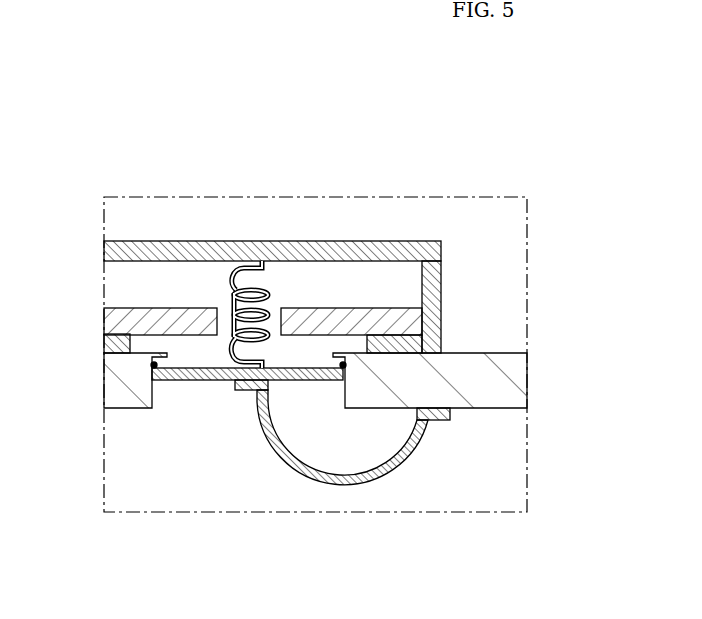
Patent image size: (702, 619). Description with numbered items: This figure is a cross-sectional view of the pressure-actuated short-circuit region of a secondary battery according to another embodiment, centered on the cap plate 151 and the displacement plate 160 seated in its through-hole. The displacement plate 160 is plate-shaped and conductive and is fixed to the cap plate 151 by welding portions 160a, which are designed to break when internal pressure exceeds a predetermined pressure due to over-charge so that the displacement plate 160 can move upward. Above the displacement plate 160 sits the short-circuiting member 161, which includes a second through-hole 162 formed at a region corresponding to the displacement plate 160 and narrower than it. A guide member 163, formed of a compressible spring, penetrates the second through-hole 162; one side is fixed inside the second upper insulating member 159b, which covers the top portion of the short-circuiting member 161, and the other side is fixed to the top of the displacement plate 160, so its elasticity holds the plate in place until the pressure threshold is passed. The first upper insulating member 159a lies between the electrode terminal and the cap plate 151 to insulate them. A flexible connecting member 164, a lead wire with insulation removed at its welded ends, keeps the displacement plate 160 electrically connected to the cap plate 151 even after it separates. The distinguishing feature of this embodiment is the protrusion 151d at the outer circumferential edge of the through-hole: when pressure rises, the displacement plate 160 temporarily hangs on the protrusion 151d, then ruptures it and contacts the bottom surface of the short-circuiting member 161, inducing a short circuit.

The cap plate 151 is at (507, 376).
The protrusion 151d is at (367, 315).
The first upper insulating member 159a is at (441, 277).
The second upper insulating member 159b is at (372, 252).
The displacement plate 160 is at (188, 381).
The welding portions 160a is at (151, 363).
The short-circuiting member 161 is at (158, 313).
The second through-hole 162 is at (225, 310).
The guide member 163 is at (268, 295).
The connecting member 164 is at (340, 486).